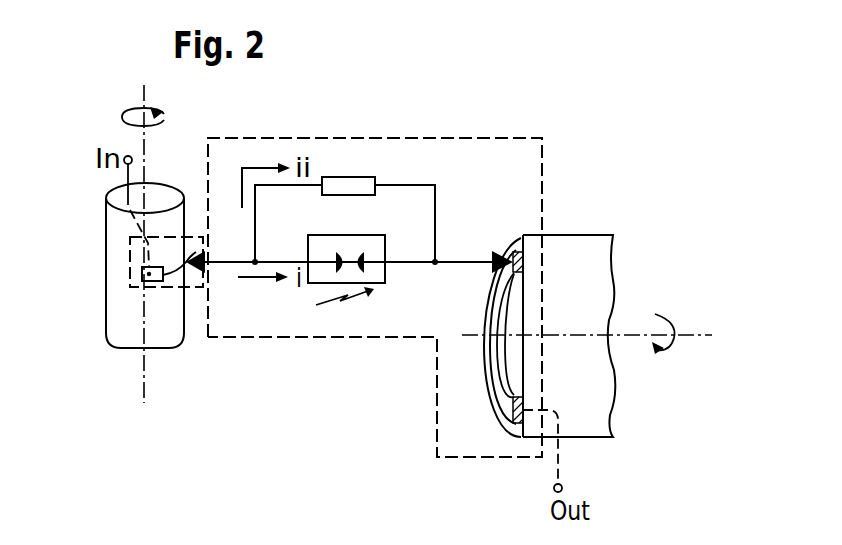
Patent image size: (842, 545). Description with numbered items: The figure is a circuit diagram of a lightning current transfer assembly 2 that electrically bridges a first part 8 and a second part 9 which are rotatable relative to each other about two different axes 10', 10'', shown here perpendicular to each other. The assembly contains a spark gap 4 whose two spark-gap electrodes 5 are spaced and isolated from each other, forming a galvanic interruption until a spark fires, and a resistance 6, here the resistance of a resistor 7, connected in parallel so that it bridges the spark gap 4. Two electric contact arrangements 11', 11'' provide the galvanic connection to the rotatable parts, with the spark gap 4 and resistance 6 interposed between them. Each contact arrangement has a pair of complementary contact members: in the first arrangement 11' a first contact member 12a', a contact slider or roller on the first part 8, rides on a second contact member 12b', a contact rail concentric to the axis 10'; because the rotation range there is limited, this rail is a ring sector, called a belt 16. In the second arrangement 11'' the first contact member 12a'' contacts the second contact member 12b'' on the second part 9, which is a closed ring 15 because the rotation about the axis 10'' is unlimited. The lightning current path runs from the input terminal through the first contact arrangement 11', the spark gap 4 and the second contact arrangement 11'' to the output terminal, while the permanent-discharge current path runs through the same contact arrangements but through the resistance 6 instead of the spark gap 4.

The lightning current transfer assembly 2 is at (542, 138).
The spark gap 4 is at (378, 284).
The spark-gap electrodes 5 is at (343, 257).
The resistance 6 is at (355, 143).
The resistor 7 is at (343, 177).
The first part 8 is at (118, 308).
The second part 9 is at (616, 282).
The first axis 10' is at (116, 229).
The second axis 10'' is at (595, 358).
The first electric contact arrangement 11' is at (220, 325).
The second electric contact arrangement 11'' is at (543, 213).
The first contact member 12a' is at (183, 205).
The first contact member 12a'' is at (485, 296).
The second contact member 12b' is at (129, 329).
The second contact member 12b'' is at (591, 308).
The closed ring 15 is at (520, 262).
The belt 16 is at (160, 280).